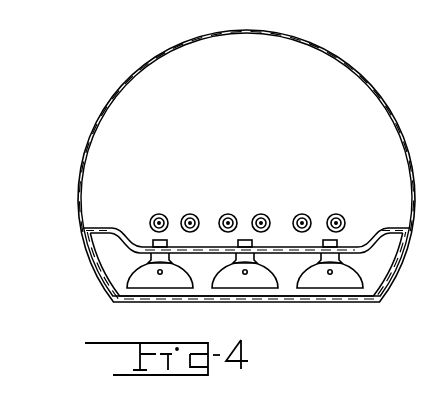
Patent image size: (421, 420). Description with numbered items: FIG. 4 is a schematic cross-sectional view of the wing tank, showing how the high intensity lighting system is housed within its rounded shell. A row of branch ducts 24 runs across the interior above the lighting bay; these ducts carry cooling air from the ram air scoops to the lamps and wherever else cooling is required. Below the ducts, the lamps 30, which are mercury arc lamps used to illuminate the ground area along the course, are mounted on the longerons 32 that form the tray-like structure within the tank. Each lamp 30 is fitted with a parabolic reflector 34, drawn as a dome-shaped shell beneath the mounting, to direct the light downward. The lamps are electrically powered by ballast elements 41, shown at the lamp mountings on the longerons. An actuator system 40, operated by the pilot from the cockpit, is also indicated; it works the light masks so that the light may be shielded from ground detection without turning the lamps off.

The branch ducts 24 is at (302, 214).
The lamps 30 is at (159, 276).
The longerons 32 is at (385, 226).
The parabolic reflector 34 is at (317, 283).
The actuator system 40 is at (172, 252).
The ballast elements 41 is at (243, 240).